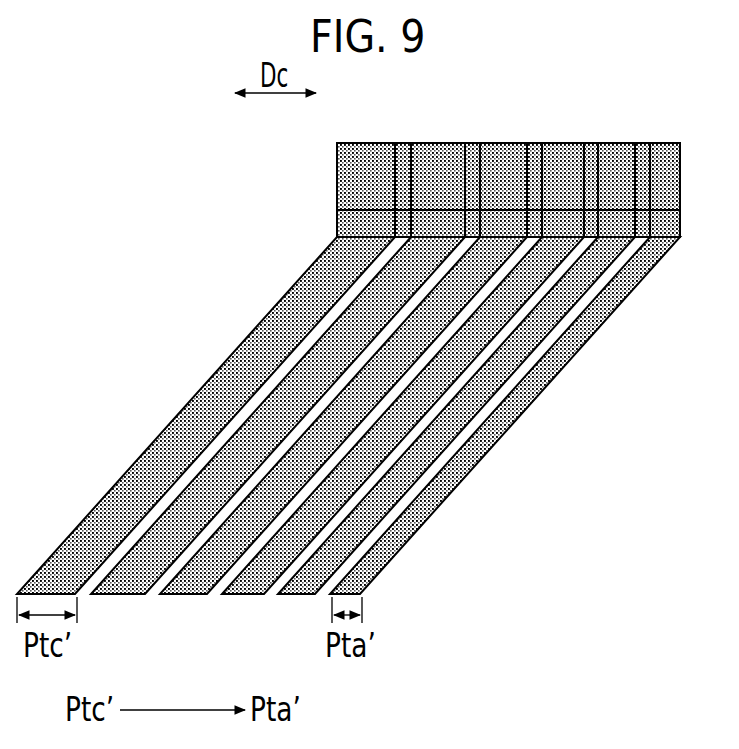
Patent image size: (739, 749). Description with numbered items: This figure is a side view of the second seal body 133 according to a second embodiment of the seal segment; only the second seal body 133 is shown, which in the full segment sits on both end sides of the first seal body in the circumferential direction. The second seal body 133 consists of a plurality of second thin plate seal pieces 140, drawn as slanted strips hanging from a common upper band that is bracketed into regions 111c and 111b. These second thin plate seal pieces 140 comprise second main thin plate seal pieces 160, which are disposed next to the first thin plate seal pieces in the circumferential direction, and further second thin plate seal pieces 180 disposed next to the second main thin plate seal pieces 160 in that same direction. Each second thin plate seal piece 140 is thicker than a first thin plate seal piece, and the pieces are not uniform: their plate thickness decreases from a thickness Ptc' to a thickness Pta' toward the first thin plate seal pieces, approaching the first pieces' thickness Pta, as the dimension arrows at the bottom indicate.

The second seal body 133 is at (131, 194).
The third region of substrate 111c is at (528, 130).
The second region of substrate 111b is at (680, 130).
The second thin plate seal pieces 140 is at (348, 415).
The second thin plate seal pieces 180 is at (137, 467).
The second main thin plate seal pieces 160 is at (452, 486).